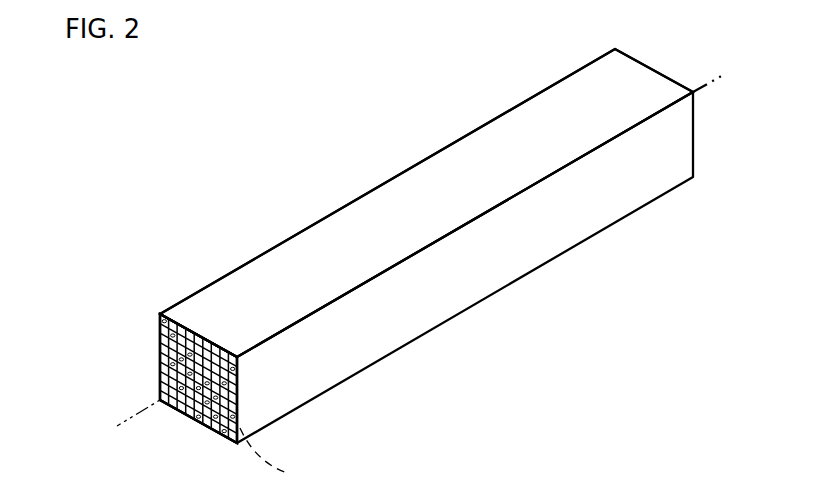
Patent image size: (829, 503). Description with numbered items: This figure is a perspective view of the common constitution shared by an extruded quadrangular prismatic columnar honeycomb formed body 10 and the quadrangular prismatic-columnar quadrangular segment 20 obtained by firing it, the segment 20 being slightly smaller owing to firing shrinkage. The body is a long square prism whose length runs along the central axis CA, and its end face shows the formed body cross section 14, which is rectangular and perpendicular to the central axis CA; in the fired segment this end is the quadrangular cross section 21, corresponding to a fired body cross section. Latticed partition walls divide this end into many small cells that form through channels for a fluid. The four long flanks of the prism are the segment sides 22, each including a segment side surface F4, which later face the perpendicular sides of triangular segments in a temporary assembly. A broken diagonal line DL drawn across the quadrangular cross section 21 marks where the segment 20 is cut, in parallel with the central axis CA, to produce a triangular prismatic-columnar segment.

The quadrangular segment 20 is at (390, 246).
The honeycomb formed body 10 is at (162, 151).
The formed body cross section 14 is at (158, 331).
The segment side 22 is at (655, 71).
The quadrangular cross section 21 is at (233, 392).
The segment side surface F4 is at (380, 198).
The central axis CA is at (135, 418).
The diagonal line DL is at (281, 459).